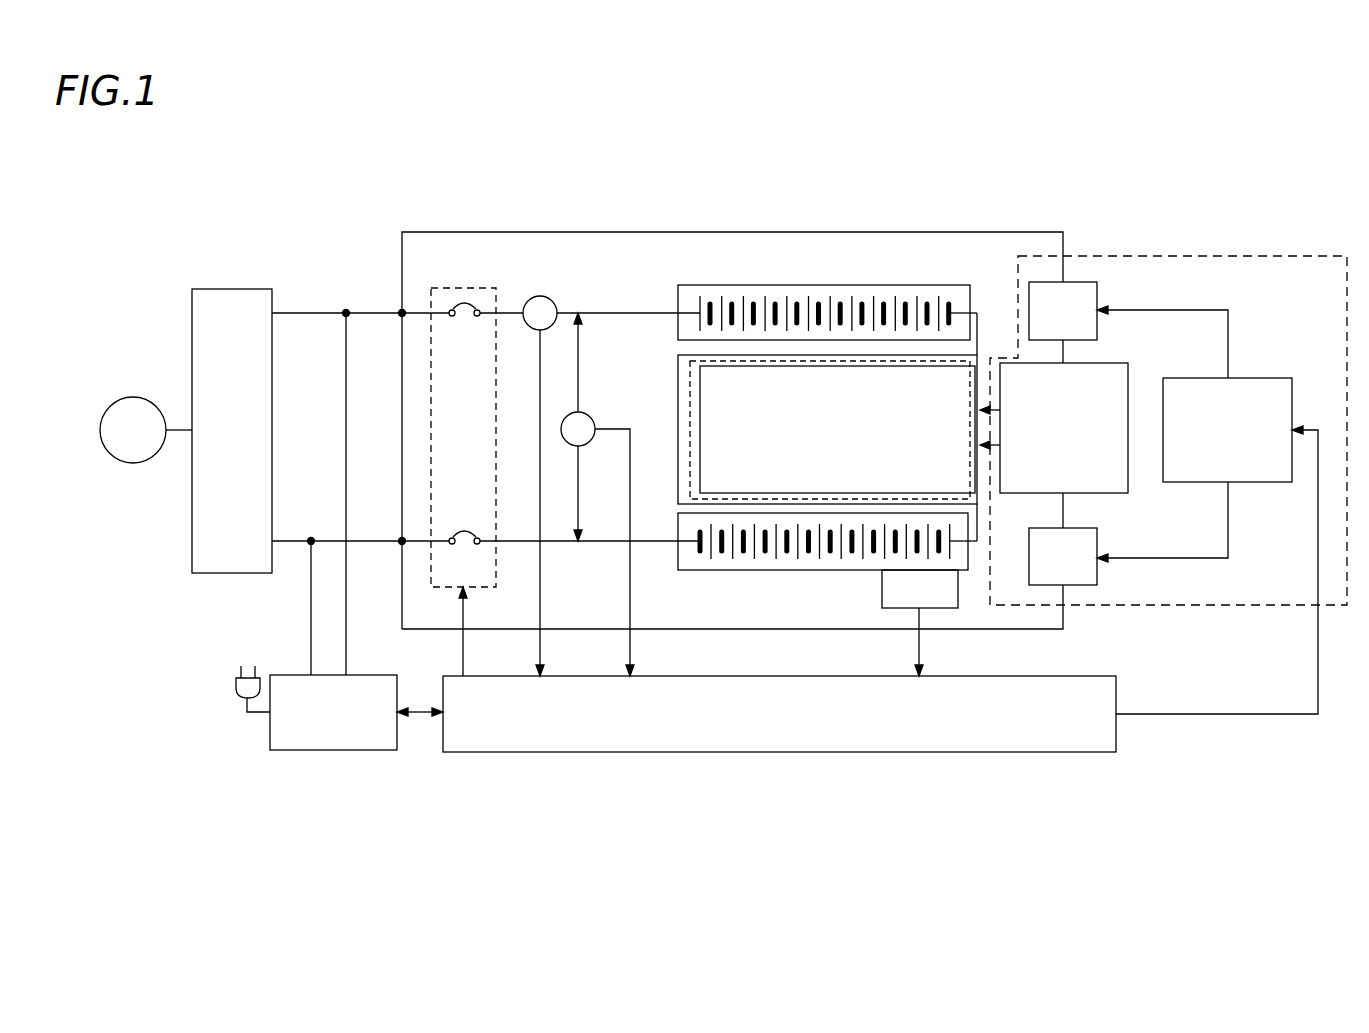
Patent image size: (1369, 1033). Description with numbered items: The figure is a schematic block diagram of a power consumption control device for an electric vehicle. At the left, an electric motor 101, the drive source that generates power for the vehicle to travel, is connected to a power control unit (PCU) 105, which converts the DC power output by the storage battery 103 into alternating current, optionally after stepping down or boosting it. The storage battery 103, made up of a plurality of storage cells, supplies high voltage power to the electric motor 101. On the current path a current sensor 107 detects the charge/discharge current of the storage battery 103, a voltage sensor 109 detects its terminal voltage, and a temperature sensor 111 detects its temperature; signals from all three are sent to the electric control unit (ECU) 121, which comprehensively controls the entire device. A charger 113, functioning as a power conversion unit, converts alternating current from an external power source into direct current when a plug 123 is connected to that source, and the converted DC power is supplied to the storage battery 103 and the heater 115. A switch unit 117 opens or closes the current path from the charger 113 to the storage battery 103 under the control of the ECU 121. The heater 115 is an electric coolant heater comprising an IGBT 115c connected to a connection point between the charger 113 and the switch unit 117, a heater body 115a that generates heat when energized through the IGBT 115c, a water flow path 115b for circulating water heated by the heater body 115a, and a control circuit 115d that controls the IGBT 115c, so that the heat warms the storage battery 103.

The electric motor 101 is at (125, 399).
The power control unit (PCU) 105 is at (232, 289).
The switch unit 117 is at (476, 288).
The current sensor 107 is at (543, 297).
The voltage sensor 109 is at (590, 414).
The storage battery 103 is at (838, 285).
The water flow path 115b is at (692, 450).
The heater body 115a is at (1130, 372).
The insulated gate bipolar transistor (IGBT) 115c is at (1099, 292).
The control circuit 115d is at (1280, 378).
The heater 115 is at (1217, 256).
The temperature sensor 111 is at (882, 590).
The charger 113 is at (333, 752).
The electric control unit (ECU) 121 is at (782, 752).
The plug 123 is at (237, 692).